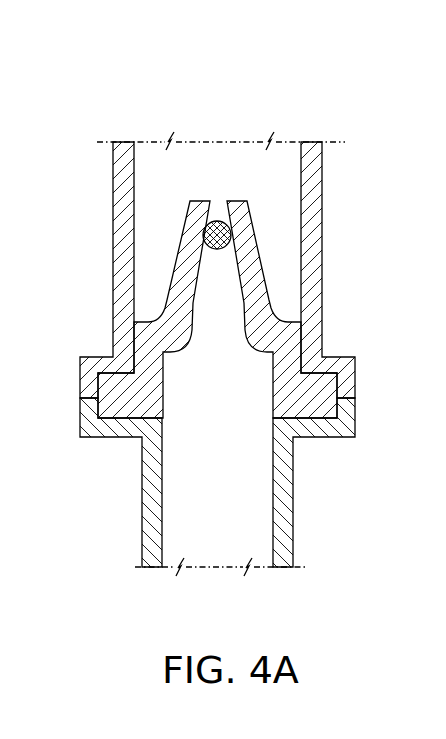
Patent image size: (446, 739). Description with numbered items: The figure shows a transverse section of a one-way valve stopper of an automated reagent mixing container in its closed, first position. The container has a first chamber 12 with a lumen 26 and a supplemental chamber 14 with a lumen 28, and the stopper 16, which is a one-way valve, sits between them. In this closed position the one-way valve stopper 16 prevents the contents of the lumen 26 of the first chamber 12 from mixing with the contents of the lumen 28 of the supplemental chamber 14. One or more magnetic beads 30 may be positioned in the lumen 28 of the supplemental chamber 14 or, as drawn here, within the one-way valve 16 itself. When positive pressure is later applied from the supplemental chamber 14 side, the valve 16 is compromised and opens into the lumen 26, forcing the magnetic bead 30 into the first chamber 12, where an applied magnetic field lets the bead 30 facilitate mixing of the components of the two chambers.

The first chamber 12 is at (324, 233).
The supplemental chamber 14 is at (292, 498).
The one-way valve stopper 16 is at (327, 407).
The lumen of the first chamber 26 is at (230, 177).
The lumen of the supplemental chamber 28 is at (230, 504).
The magnetic bead 30 is at (203, 236).